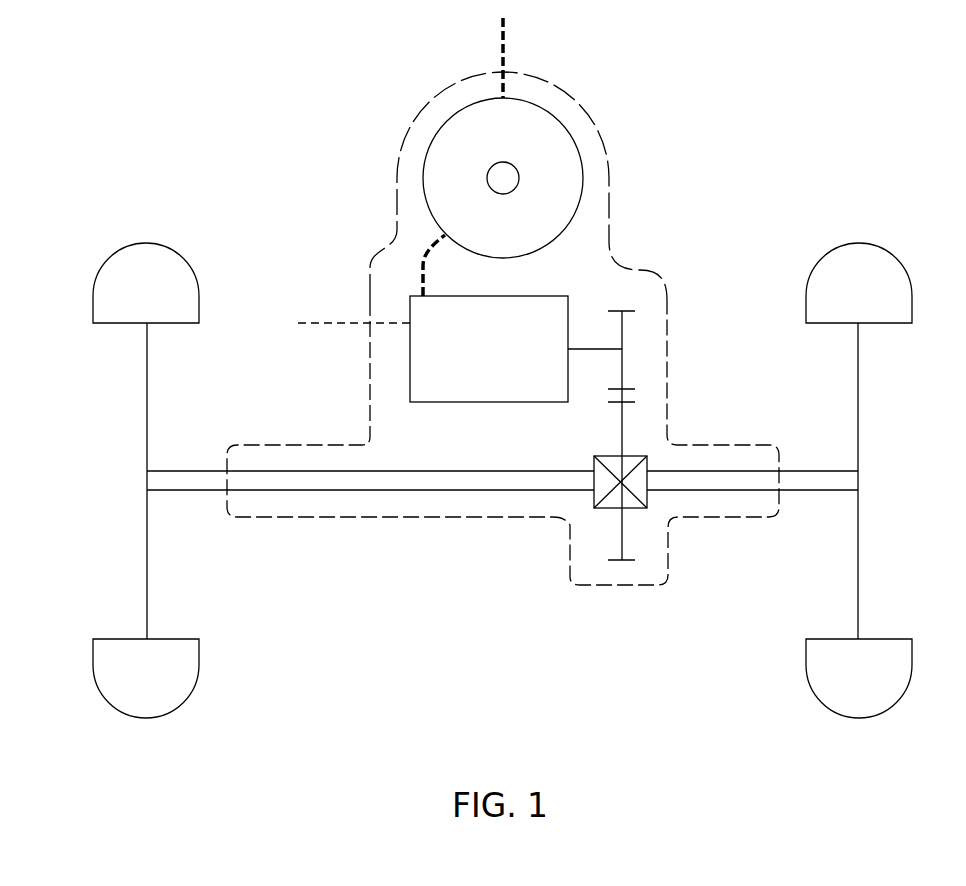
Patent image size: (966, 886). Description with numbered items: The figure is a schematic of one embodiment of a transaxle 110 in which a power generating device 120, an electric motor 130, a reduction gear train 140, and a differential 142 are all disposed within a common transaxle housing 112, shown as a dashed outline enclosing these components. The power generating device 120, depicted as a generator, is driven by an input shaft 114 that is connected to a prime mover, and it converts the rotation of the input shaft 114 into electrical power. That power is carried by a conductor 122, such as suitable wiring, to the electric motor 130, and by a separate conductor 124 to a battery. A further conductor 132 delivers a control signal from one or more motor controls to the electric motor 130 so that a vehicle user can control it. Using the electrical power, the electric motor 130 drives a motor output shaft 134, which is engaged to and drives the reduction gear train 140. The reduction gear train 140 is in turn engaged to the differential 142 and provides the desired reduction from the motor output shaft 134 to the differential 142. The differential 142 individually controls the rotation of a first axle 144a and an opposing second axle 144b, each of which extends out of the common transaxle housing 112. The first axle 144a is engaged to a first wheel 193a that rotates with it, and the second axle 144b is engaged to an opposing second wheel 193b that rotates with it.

The transaxle 110 is at (242, 75).
The transaxle housing 112 is at (552, 82).
The input shaft 114 is at (503, 170).
The power generating device 120 is at (485, 232).
The conductor 122 is at (424, 263).
The conductor 124 is at (500, 33).
The electric motor 130 is at (470, 359).
The conductor 132 is at (318, 322).
The motor output shaft 134 is at (597, 348).
The reduction gear train 140 is at (648, 372).
The differential 142 is at (607, 455).
The first axle 144a is at (177, 492).
The second axle 144b is at (828, 492).
The first wheel 193a is at (146, 581).
The second wheel 193b is at (858, 581).